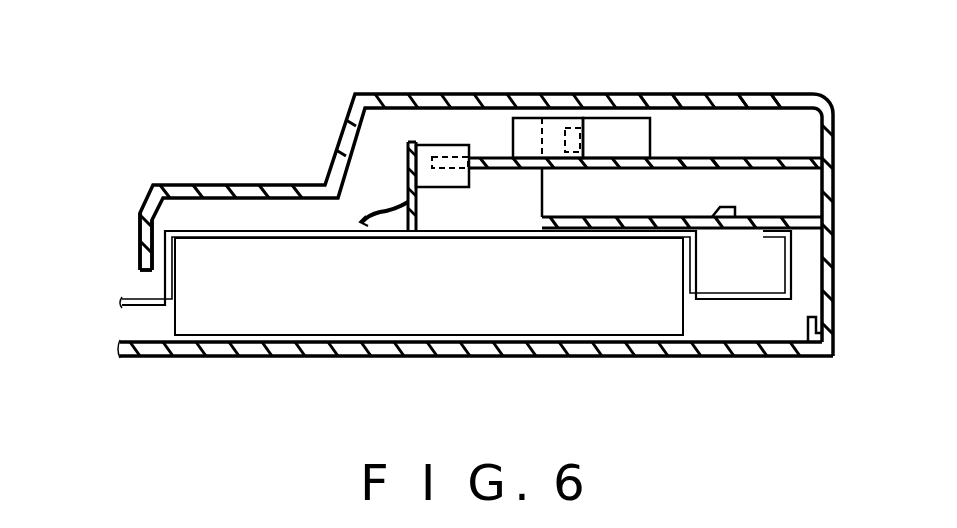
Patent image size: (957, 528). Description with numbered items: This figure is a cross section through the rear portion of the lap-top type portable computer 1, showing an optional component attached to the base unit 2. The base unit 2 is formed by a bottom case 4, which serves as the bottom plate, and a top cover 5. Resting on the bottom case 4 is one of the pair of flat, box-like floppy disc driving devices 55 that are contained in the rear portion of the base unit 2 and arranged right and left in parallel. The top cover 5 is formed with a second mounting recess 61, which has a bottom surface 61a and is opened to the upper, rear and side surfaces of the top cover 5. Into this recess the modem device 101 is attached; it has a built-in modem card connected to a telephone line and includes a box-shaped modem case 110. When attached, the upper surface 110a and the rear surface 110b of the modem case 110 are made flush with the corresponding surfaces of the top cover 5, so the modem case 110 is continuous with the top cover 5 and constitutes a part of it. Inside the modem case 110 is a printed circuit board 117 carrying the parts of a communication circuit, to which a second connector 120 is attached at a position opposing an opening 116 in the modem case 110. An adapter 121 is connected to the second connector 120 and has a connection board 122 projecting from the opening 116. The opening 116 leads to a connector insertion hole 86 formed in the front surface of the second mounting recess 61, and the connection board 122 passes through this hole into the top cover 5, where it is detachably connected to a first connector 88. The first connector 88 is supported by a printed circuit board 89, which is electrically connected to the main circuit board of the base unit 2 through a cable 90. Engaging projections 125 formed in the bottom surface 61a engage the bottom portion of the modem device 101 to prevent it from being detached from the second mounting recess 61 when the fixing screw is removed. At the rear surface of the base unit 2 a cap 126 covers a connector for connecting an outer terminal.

The portable computer 1 is at (351, 88).
The base unit 2 is at (80, 230).
The bottom case 4 is at (135, 345).
The top cover 5 is at (142, 238).
The floppy disc driving devices 55 is at (430, 318).
The second mounting recess 61 is at (618, 226).
The bottom surface 61a is at (768, 217).
The connector insertion hole 86 is at (535, 118).
The first connector 88 is at (430, 147).
The printed circuit board 89 is at (408, 158).
The cable 90 is at (384, 216).
The modem device 101 is at (758, 94).
The modem case 110 is at (834, 112).
The upper surface 110a is at (652, 94).
The rear surface 110b is at (834, 172).
The opening 116 is at (541, 190).
The printed circuit board 117 is at (677, 158).
The second connector 120 is at (610, 133).
The adapter 121 is at (555, 130).
The connection board 122 is at (480, 160).
The engaging projections 125 is at (722, 207).
The cap 126 is at (834, 258).